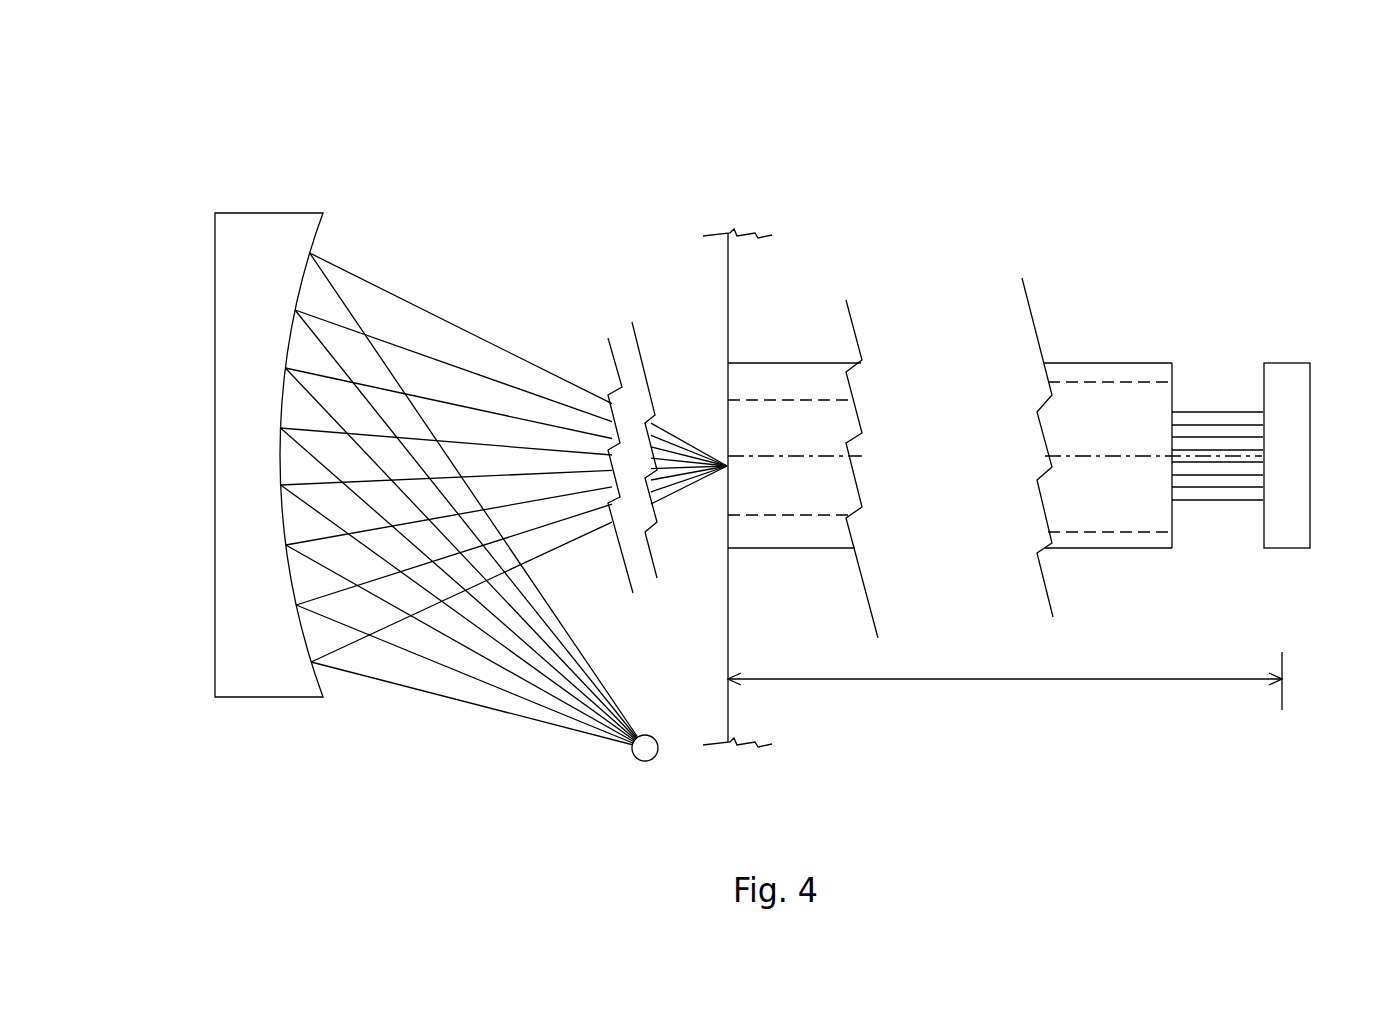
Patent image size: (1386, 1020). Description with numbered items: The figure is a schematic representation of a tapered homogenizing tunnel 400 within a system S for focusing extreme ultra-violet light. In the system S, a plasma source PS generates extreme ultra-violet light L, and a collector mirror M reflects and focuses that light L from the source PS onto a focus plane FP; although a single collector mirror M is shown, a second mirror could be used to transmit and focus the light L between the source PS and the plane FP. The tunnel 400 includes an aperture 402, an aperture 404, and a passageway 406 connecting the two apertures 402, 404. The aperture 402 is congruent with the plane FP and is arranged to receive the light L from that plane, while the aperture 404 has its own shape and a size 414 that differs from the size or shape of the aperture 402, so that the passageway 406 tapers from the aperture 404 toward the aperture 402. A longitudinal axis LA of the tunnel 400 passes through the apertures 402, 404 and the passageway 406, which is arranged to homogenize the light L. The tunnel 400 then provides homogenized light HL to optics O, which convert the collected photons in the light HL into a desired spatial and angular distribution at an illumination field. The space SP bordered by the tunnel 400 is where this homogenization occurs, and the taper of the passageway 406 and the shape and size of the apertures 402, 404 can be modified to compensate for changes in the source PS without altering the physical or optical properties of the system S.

The space SP is at (545, 114).
The collector mirror M is at (277, 213).
The extreme ultra-violet light L is at (478, 300).
The focus plane FP is at (728, 308).
The plasma source PS is at (659, 751).
The system S is at (917, 206).
The tapered homogenizing tunnel 400 is at (1085, 305).
The aperture 402 is at (714, 530).
The aperture 404 is at (1192, 406).
The passageway 406 is at (822, 398).
The homogenized light HL is at (1226, 420).
The longitudinal axis LA is at (1205, 458).
The optics O is at (1285, 550).
The size 414 is at (1043, 681).